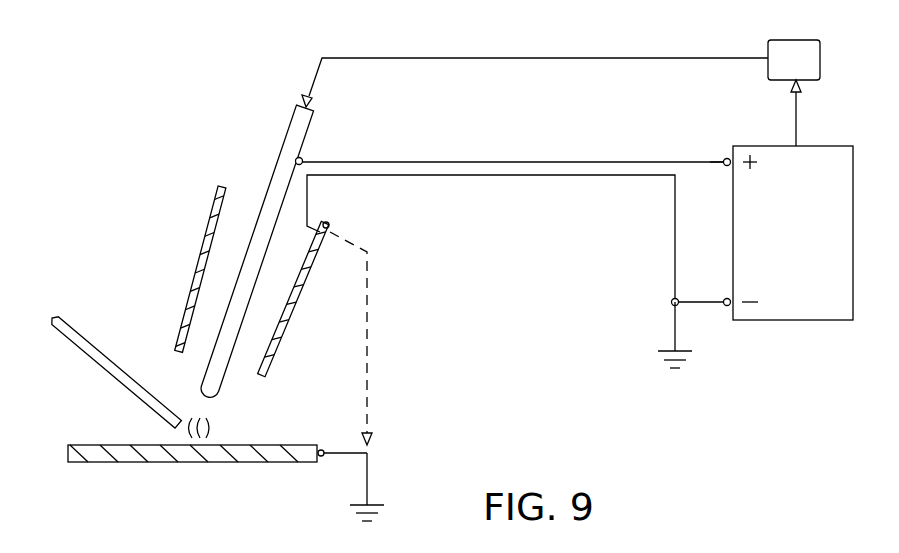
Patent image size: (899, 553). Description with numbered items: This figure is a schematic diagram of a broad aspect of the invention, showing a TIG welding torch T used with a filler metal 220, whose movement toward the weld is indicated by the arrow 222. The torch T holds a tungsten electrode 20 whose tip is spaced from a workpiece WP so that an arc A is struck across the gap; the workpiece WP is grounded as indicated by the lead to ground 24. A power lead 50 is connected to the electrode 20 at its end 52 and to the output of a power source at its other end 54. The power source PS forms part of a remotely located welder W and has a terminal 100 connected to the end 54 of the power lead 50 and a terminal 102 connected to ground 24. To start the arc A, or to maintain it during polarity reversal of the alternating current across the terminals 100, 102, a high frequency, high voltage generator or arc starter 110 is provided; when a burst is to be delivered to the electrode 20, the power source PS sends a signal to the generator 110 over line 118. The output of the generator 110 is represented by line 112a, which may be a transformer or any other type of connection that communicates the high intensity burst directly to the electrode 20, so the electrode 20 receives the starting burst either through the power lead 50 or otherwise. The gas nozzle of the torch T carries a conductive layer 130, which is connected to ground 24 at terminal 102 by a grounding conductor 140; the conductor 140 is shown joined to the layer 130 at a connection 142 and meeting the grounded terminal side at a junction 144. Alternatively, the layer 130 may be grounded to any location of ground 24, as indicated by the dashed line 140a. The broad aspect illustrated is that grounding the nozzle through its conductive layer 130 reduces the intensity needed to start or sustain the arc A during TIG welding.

The tungsten electrode 20 is at (266, 171).
The end of power lead 52 is at (303, 157).
The power lead 50 is at (488, 160).
The line 112a is at (612, 57).
The high frequency, high voltage generator 110 is at (820, 60).
The line 118 is at (798, 118).
The terminal 100 is at (723, 158).
The terminal 102 is at (726, 308).
The end of power lead 54 is at (723, 166).
The conductor 140 is at (442, 178).
The junction 144 is at (668, 302).
The ground 24 is at (658, 367).
The shield connection 142 is at (323, 220).
The conductive layer 130 is at (283, 333).
The dashed line 140a is at (368, 333).
The filler rod 220 is at (78, 330).
The rod feed direction 222 is at (84, 362).
The TIG welding torch T is at (152, 200).
The welder W is at (730, 38).
The arc A is at (213, 427).
The workpiece WP is at (135, 462).
The power source PS is at (822, 322).